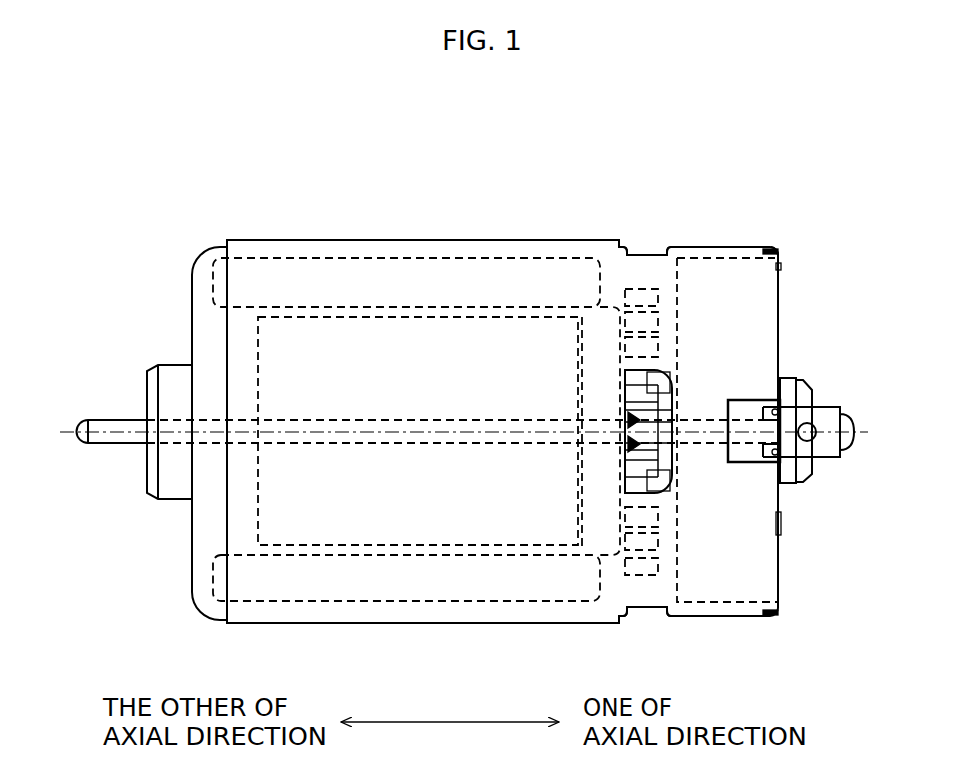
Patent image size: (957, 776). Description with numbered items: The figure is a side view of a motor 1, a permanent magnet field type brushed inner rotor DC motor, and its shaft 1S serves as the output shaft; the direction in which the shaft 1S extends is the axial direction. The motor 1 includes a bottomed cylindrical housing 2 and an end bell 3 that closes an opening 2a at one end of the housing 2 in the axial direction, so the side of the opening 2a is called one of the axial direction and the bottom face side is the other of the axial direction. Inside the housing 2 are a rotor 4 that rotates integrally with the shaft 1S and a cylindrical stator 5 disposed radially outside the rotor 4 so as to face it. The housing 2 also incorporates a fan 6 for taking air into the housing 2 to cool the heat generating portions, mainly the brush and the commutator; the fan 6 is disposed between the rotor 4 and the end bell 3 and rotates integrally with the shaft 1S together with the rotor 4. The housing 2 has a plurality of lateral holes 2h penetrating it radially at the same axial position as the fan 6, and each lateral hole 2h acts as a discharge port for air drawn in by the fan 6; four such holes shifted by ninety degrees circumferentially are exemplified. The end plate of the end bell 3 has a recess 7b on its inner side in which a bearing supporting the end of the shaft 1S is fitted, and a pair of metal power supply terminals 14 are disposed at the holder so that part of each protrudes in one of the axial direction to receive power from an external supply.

The motor 1 is at (92, 251).
The shaft 1S is at (118, 418).
The housing 2 is at (348, 239).
The opening 2a is at (786, 262).
The lateral hole 2h is at (639, 252).
The end bell 3 is at (766, 556).
The rotor 4 is at (277, 364).
The stator 5 is at (266, 281).
The fan 6 is at (636, 284).
The recess 7b is at (805, 386).
The power supply terminal 14 is at (822, 452).